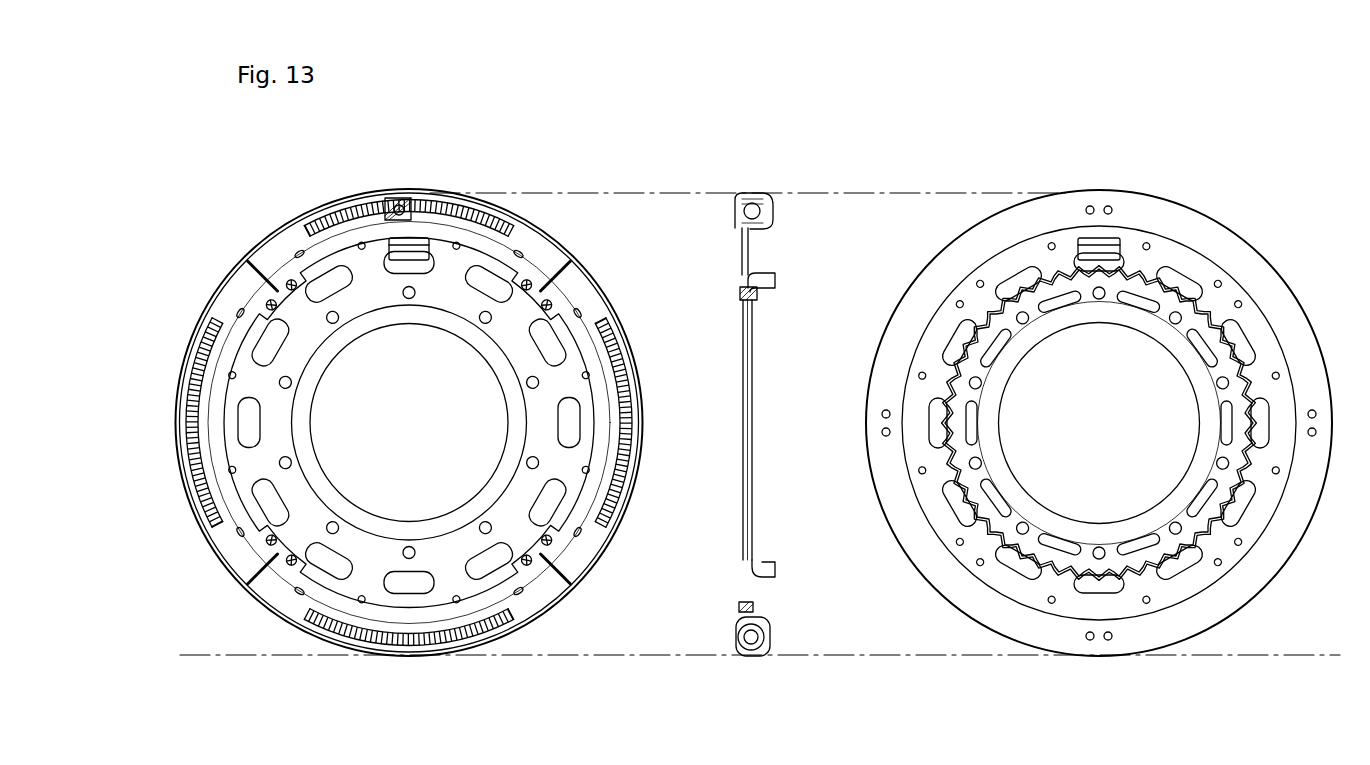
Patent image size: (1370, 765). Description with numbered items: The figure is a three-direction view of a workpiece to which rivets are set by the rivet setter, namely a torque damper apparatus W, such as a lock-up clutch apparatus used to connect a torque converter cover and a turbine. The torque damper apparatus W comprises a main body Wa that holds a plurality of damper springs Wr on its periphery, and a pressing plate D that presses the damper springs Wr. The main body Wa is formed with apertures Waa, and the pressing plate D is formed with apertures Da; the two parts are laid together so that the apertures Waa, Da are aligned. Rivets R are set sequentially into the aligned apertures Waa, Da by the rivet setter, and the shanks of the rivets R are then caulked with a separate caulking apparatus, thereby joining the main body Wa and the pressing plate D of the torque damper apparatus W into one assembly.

The torque damper apparatus W is at (270, 235).
The main body Wa is at (397, 206).
The apertures Waa is at (354, 244).
The damper springs Wr is at (377, 198).
The pressing plate D is at (266, 260).
The apertures Da is at (208, 477).
The rivets R is at (436, 300).